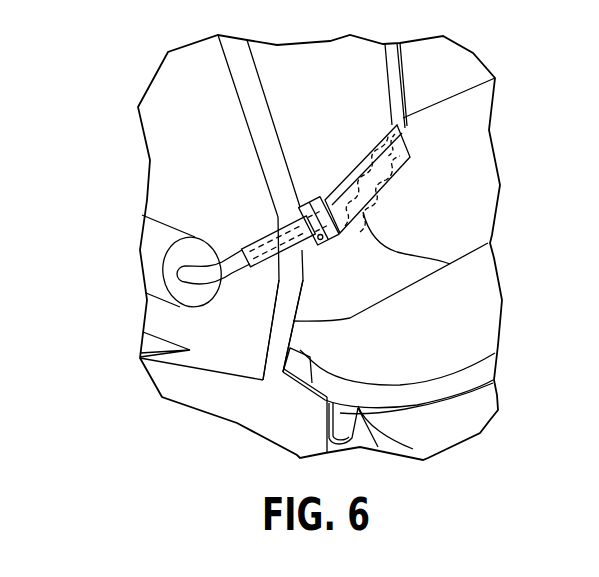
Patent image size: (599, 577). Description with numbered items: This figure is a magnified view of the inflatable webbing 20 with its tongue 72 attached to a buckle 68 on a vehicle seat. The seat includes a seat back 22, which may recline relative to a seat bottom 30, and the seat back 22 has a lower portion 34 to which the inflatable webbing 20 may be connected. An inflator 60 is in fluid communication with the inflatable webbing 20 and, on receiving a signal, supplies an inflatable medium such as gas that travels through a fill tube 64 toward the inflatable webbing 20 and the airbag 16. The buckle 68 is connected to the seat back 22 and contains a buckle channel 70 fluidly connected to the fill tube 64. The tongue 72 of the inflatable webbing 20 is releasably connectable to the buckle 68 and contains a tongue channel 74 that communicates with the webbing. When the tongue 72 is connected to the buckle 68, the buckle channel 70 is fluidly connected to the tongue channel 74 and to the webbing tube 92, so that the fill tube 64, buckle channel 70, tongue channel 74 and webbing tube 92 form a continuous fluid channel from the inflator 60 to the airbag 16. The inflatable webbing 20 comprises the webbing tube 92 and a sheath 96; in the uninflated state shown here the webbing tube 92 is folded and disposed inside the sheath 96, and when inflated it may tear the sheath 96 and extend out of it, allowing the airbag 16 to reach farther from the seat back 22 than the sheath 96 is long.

The airbag 16 is at (403, 73).
The seat back 22 is at (192, 120).
The inflator 60 is at (158, 238).
The fill tube 64 is at (232, 261).
The buckle channel 70 is at (292, 215).
The tongue 72 is at (306, 207).
The tongue channel 74 is at (330, 238).
The inflatable webbing 20 is at (380, 189).
The webbing tube 92 is at (376, 157).
The sheath 96 is at (450, 264).
The lower portion 34 is at (173, 325).
The seat bottom 30 is at (421, 352).
The buckle 68 is at (300, 279).